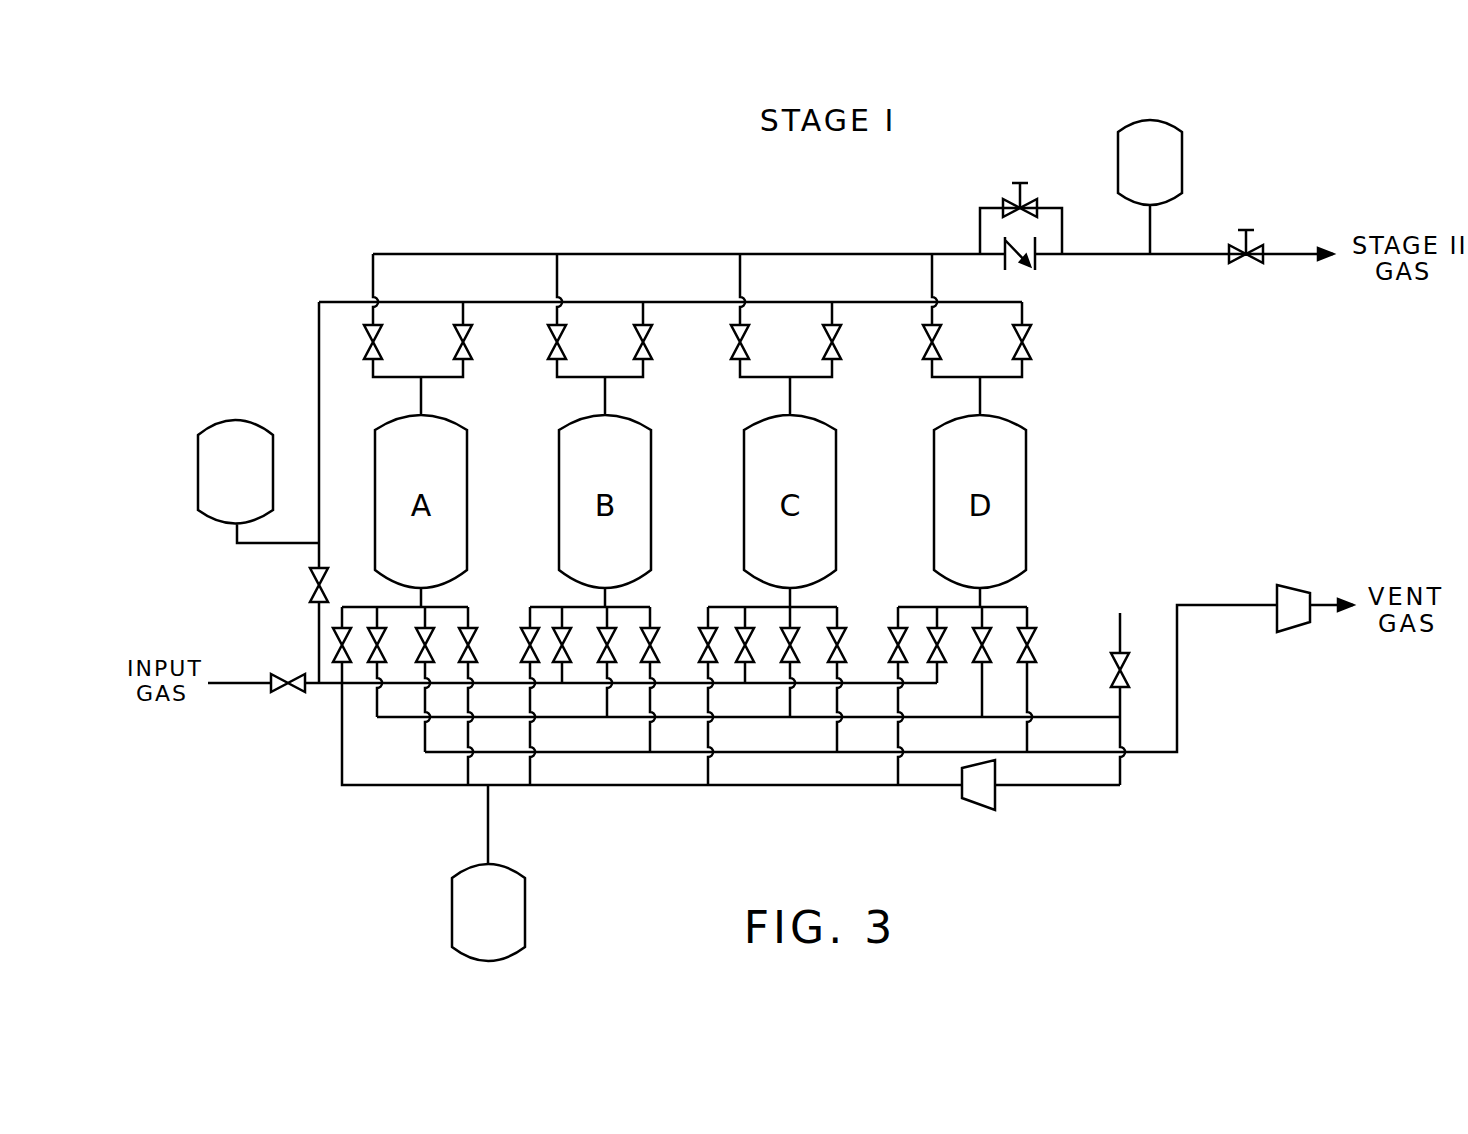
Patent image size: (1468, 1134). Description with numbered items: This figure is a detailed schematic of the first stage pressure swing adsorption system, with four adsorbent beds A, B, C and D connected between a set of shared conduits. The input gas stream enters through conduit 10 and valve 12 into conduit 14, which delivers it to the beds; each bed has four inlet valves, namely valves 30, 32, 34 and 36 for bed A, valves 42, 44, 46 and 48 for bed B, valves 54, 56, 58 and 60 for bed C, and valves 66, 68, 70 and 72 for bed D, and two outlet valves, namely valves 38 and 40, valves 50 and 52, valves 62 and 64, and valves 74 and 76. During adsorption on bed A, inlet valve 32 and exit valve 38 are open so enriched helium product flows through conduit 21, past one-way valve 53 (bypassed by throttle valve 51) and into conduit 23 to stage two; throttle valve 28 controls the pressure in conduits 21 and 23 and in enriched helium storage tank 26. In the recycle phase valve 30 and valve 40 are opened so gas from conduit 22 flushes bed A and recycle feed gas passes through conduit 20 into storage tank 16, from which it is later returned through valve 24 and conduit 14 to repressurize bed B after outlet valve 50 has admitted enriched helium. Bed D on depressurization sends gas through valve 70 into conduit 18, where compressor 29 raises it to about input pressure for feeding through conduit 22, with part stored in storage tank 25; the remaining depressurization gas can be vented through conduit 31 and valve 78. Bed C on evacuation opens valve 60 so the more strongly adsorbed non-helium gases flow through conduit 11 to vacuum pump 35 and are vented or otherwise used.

The conduit 10 is at (245, 686).
The conduit 11 is at (1085, 787).
The valve 12 is at (295, 700).
The conduit 14 is at (322, 688).
The storage tank 16 is at (215, 440).
The conduit 18 is at (430, 717).
The conduit 20 is at (335, 300).
The conduit 21 is at (840, 252).
The conduit 22 is at (815, 785).
The conduit 23 is at (1290, 254).
The valve 24 is at (308, 578).
The storage tank 25 is at (515, 935).
The enriched helium storage tank 26 is at (1175, 150).
The throttle valve 28 is at (1235, 268).
The compressor 29 is at (982, 805).
The valve 30 is at (330, 635).
The conduit 31 is at (1118, 702).
The inlet valve 32 is at (370, 630).
The valve 34 is at (432, 632).
The vacuum pump 35 is at (1293, 620).
The valve 36 is at (475, 632).
The exit valve 38 is at (372, 353).
The valve 40 is at (473, 355).
The inlet valve 42 is at (522, 645).
The inlet valve 44 is at (565, 662).
The inlet valve 46 is at (613, 632).
The inlet valve 48 is at (655, 632).
The outlet valve 50 is at (548, 350).
The throttle valve 51 is at (998, 200).
The outlet valve 52 is at (652, 352).
The one-way valve 53 is at (1033, 268).
The inlet valve 54 is at (702, 645).
The inlet valve 56 is at (750, 662).
The inlet valve 58 is at (797, 632).
The valve 60 is at (843, 632).
The outlet valve 62 is at (732, 332).
The outlet valve 64 is at (840, 336).
The inlet valve 66 is at (892, 645).
The inlet valve 68 is at (942, 658).
The valve 70 is at (990, 632).
The inlet valve 72 is at (1033, 638).
The outlet valve 74 is at (924, 352).
The outlet valve 76 is at (1032, 350).
The valve 78 is at (1110, 680).